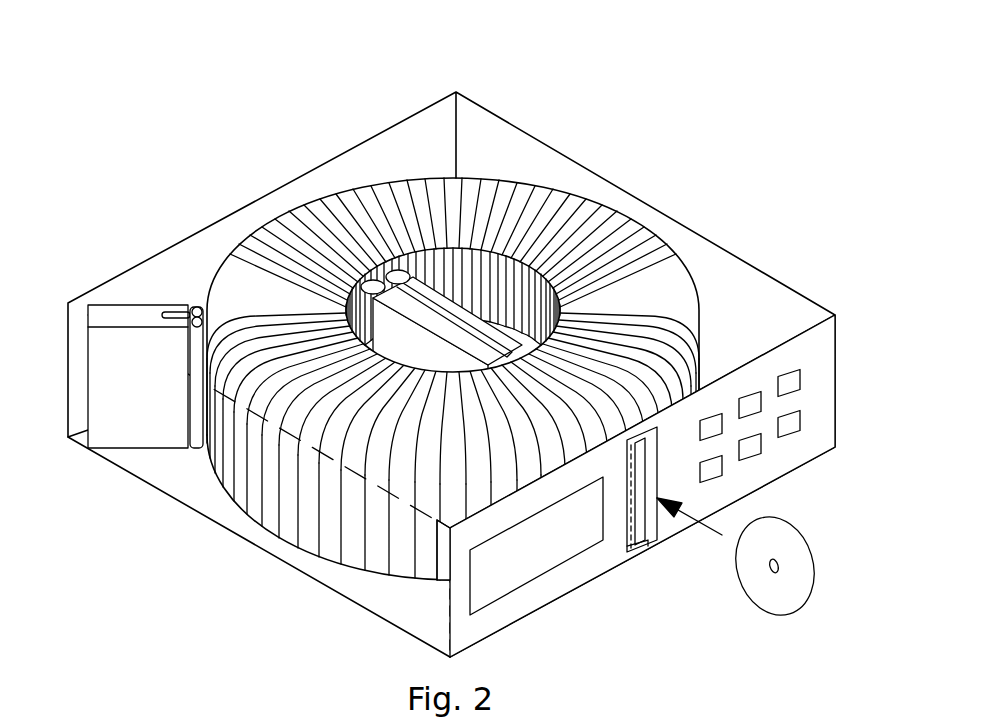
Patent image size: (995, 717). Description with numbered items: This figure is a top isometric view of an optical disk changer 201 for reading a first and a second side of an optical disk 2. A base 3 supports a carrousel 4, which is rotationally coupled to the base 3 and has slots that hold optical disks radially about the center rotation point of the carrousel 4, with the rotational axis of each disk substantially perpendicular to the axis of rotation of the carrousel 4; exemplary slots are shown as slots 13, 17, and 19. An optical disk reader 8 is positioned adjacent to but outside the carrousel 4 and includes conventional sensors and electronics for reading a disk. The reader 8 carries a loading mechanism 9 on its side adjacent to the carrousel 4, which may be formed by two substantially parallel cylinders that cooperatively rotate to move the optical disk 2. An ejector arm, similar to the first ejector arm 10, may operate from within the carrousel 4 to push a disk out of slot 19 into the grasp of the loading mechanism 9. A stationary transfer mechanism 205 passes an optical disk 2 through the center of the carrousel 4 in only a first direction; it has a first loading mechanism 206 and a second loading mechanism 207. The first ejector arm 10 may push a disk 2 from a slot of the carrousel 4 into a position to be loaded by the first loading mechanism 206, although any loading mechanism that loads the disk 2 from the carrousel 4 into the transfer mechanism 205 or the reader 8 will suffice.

The optical disk changer 201 is at (495, 104).
The optical disk 2 is at (773, 585).
The base 3 is at (200, 488).
The carrousel 4 is at (553, 265).
The optical disk reader 8 is at (132, 313).
The loading mechanism 9 is at (200, 235).
The first ejector arm 10 is at (633, 475).
The slot 13 is at (602, 390).
The slot 17 is at (307, 233).
The slot 19 is at (201, 305).
The transfer mechanism 205 is at (443, 315).
The first loading mechanism 206 is at (603, 335).
The second loading mechanism 207 is at (267, 305).